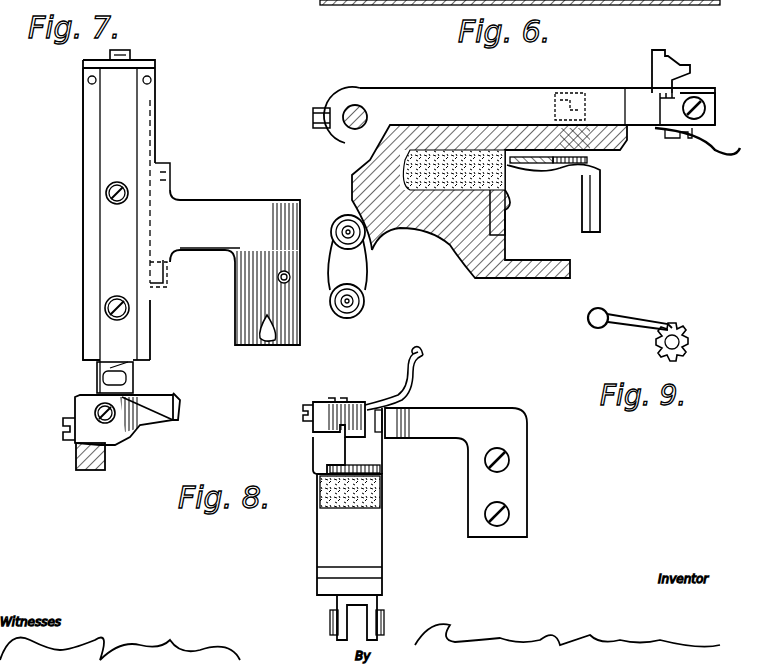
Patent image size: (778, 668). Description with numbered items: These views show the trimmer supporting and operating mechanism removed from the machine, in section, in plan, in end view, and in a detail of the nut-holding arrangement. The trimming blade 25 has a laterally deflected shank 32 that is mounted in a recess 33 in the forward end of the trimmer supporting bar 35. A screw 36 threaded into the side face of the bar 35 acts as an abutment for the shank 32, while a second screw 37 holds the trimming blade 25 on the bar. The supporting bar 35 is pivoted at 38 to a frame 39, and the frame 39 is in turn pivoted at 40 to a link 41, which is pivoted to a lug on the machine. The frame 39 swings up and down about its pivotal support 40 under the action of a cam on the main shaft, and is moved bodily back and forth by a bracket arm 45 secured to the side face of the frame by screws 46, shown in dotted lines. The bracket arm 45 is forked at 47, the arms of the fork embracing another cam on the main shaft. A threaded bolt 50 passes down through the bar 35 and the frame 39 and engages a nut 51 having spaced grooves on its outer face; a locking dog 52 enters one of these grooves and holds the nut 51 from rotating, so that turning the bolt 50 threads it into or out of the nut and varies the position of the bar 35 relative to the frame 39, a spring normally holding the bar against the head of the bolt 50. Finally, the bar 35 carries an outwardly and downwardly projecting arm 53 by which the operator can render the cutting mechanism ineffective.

In FIG. 7, the trimming blade 25 is at (178, 398).
In FIG. 6, the trimming blade 25 is at (672, 72).
In FIG. 8, the trimming blade 25 is at (420, 356).
In FIG. 8, the laterally deflected shank 32 is at (380, 400).
In FIG. 6, the recess 33 is at (666, 105).
In FIG. 7, the trimmer supporting bar 35 is at (100, 238).
In FIG. 6, the trimmer supporting bar 35 is at (520, 103).
In FIG. 7, the screw 36 is at (65, 436).
In FIG. 6, the screw 36 is at (704, 103).
In FIG. 8, the screw 36 is at (310, 422).
In FIG. 7, the screw 37 is at (115, 415).
In FIG. 6, the screw 37 is at (682, 96).
In FIG. 8, the screw 37 is at (345, 402).
In FIG. 6, the pivot 38 is at (370, 107).
In FIG. 7, the frame 39 is at (83, 273).
In FIG. 6, the frame 39 is at (463, 246).
In FIG. 6, the pivot 40 is at (338, 222).
In FIG. 6, the link 41 is at (363, 278).
In FIG. 7, the bracket arm 45 is at (235, 267).
In FIG. 7, the screws 46 is at (170, 170).
In FIG. 6, the fork 47 is at (582, 203).
In FIG. 8, the fork 47 is at (512, 488).
In FIG. 7, the threaded bolt 50 is at (105, 312).
In FIG. 6, the nut 51 is at (600, 168).
In FIG. 9, the nut 51 is at (691, 346).
In FIG. 9, the locking dog 52 is at (647, 318).
In FIG. 7, the outwardly and downwardly projecting arm 53 is at (88, 460).
In FIG. 6, the outwardly and downwardly projecting arm 53 is at (728, 150).